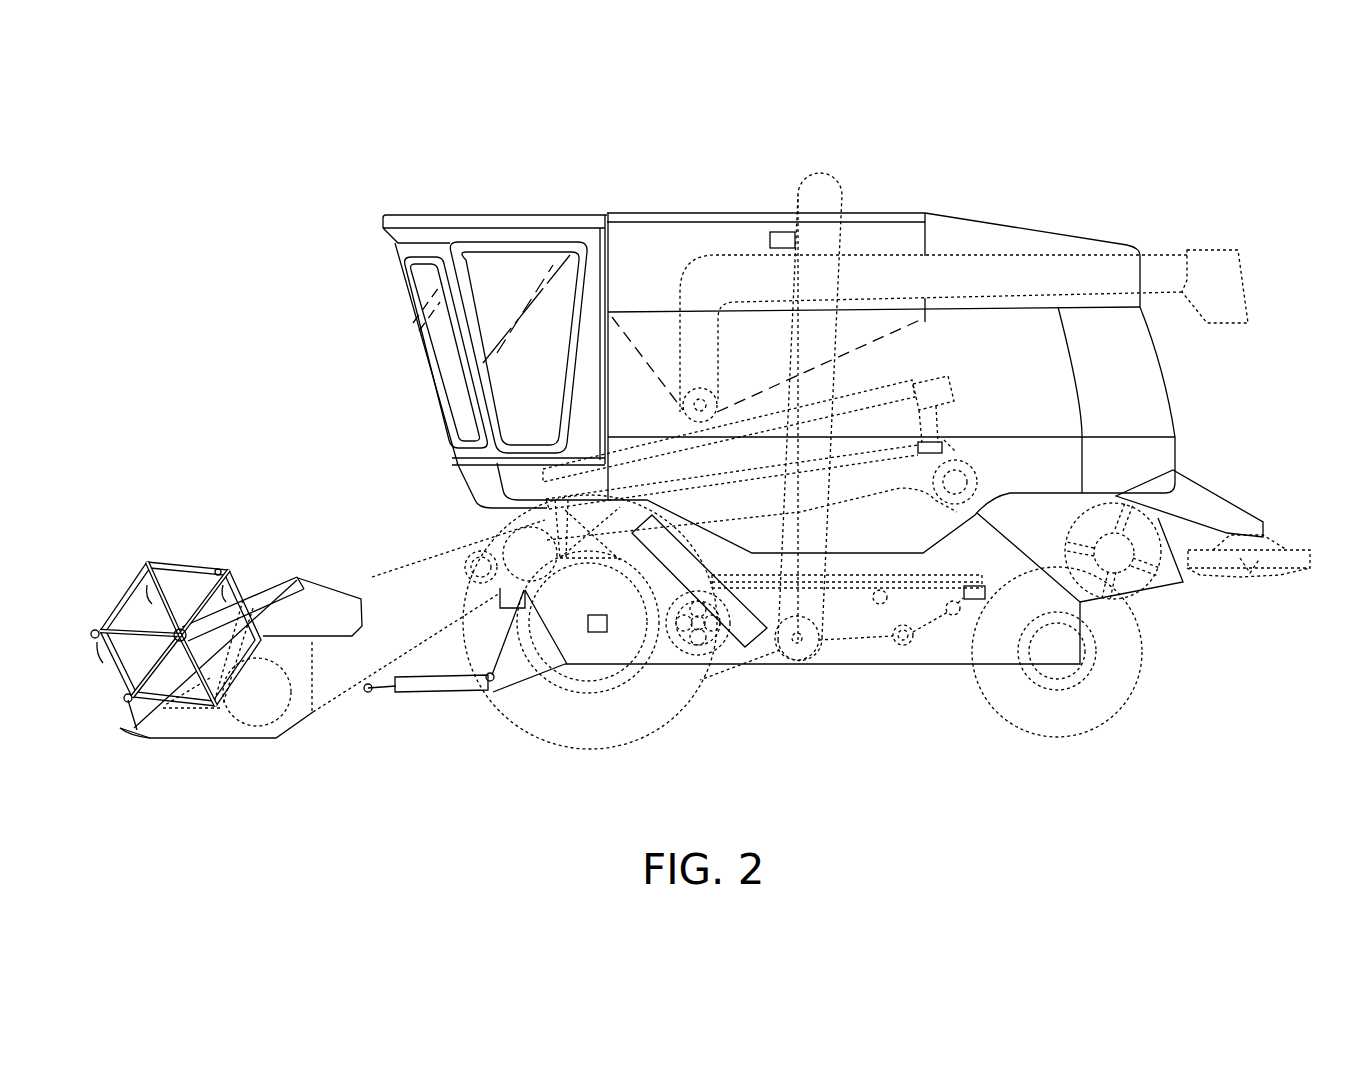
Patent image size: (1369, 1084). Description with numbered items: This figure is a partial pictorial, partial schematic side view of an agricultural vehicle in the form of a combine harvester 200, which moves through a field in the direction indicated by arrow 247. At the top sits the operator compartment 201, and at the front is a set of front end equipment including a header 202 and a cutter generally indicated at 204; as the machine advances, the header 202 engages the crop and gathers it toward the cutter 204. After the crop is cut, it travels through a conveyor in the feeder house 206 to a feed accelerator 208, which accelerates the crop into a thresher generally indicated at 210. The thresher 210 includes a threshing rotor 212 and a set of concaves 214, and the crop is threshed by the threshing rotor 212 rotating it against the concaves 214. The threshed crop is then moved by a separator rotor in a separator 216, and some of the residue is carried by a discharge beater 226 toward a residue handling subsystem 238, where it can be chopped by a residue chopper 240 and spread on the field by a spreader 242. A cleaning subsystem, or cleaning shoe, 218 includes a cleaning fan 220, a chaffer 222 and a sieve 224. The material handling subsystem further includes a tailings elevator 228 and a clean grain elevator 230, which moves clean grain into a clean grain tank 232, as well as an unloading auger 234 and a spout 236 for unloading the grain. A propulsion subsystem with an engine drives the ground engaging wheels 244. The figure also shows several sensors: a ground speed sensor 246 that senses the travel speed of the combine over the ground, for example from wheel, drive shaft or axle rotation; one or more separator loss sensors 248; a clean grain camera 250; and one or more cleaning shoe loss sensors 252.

The combine harvester 200 is at (908, 106).
The operator compartment 201 is at (490, 214).
The header 202 is at (197, 562).
The cutter 204 is at (178, 750).
The feeder house 206 is at (391, 570).
The feed accelerator 208 is at (510, 540).
The thresher 210 is at (858, 380).
The threshing rotor 212 is at (905, 381).
The concaves 214 is at (920, 465).
The separator 216 is at (851, 500).
The cleaning subsystem 218 is at (980, 614).
The cleaning fan 220 is at (673, 638).
The chaffer 222 is at (972, 570).
The sieve 224 is at (908, 583).
The discharge beater 226 is at (980, 473).
The tailings elevator 228 is at (742, 648).
The clean grain elevator 230 is at (820, 602).
The clean grain tank 232 is at (641, 300).
The unloading auger 234 is at (718, 405).
The spout 236 is at (1212, 247).
The residue handling subsystem 238 is at (1231, 482).
The residue chopper 240 is at (1117, 598).
The spreader 242 is at (1212, 573).
The ground engaging wheels 244 is at (500, 712).
The ground speed sensor 246 is at (596, 632).
The arrow 247 is at (345, 413).
The separator loss sensors 248 is at (941, 445).
The clean grain camera 250 is at (773, 232).
The cleaning shoe loss sensors 252 is at (986, 595).